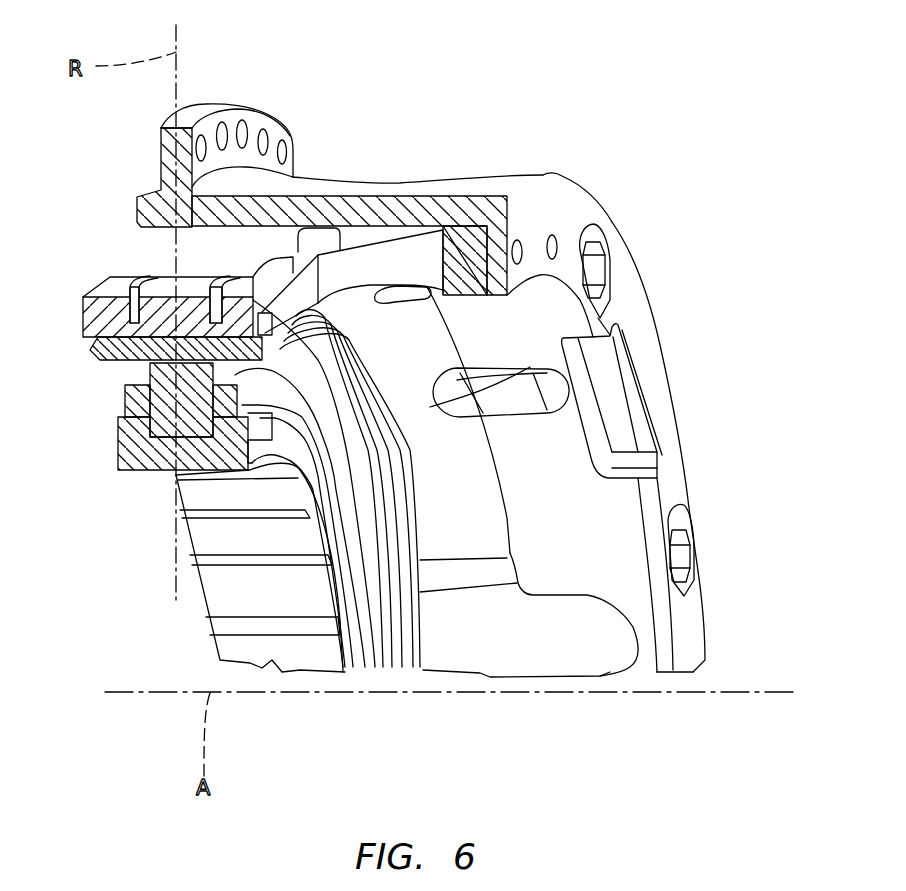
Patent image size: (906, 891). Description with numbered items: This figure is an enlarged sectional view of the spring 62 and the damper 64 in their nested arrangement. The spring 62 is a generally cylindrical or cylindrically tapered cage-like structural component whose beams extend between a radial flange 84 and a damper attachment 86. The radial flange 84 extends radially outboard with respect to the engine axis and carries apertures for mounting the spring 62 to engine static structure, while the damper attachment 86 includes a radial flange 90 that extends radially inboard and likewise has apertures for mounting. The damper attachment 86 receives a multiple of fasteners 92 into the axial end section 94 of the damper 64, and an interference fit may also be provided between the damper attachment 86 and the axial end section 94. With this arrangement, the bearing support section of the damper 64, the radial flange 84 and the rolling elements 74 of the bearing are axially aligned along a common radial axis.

The spring 62 is at (605, 198).
The damper 64 is at (124, 274).
The rolling elements 74 is at (120, 431).
The radial flange 84 is at (258, 109).
The damper attachment 86 is at (553, 172).
The radial flange 90 is at (628, 386).
The fasteners 92 is at (692, 533).
The axial end section 94 is at (472, 297).